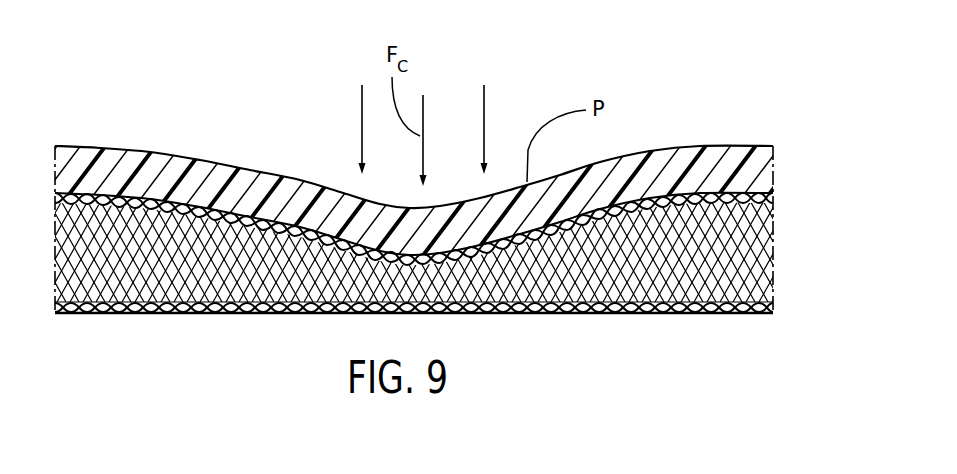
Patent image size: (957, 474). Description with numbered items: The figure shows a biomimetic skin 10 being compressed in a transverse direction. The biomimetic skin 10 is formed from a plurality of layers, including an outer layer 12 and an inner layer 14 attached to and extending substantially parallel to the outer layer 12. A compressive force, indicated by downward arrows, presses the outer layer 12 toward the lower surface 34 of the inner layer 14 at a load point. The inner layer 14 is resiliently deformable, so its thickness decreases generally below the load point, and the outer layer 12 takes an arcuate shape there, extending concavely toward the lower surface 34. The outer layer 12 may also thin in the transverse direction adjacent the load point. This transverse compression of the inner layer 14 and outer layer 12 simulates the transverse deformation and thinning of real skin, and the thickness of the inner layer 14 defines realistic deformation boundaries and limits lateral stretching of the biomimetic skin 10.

The biomimetic skin 10 is at (752, 88).
The outer layer 12 is at (685, 160).
The inner layer 14 is at (760, 252).
The lower surface 34 is at (645, 310).